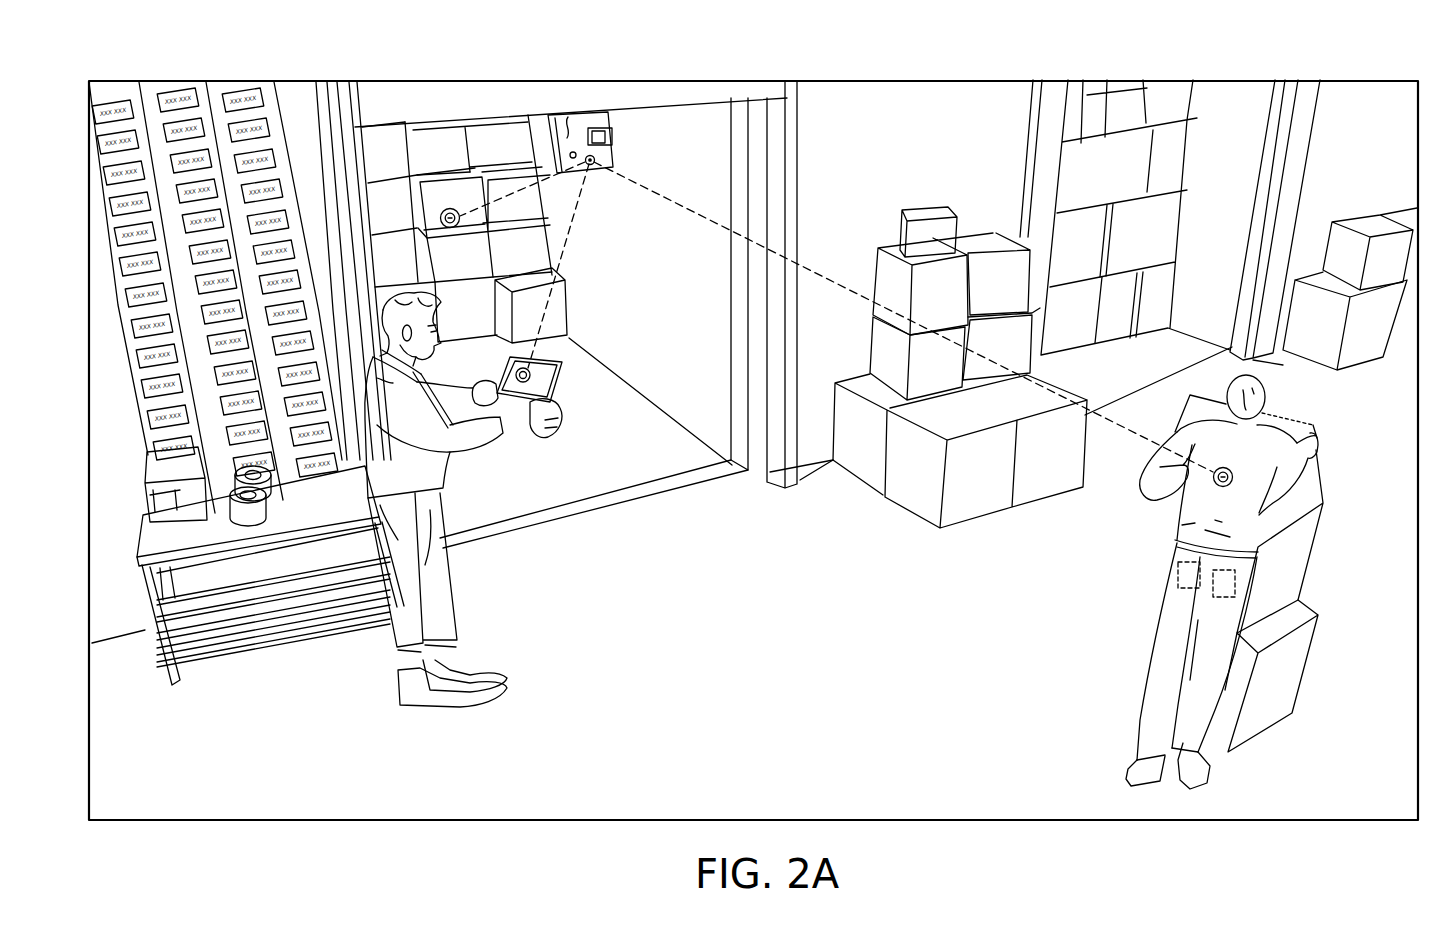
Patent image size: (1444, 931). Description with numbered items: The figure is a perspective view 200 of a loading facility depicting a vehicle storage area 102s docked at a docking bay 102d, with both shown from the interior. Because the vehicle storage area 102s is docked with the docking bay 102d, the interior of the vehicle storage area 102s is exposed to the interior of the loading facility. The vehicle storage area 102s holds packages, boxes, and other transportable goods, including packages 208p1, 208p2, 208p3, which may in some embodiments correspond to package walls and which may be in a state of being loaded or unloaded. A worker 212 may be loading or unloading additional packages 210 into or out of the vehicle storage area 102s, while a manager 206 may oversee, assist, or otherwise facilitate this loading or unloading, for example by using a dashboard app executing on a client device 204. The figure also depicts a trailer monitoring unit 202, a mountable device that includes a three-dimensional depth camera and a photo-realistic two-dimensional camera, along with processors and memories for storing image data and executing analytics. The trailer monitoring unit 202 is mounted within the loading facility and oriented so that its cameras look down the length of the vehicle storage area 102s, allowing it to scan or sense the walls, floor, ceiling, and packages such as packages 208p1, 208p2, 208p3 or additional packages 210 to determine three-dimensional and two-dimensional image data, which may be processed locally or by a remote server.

The perspective view 200 is at (133, 53).
The trailer monitoring unit (TMU) 202 is at (607, 157).
The client device 204 is at (540, 375).
The manager 206 is at (453, 597).
The package 208p1 is at (462, 132).
The package 208p2 is at (440, 208).
The package 208p3 is at (568, 310).
The additional packages 210 is at (1300, 424).
The worker 212 is at (1208, 447).
The docking bay 102d is at (752, 378).
The vehicle storage area 102s is at (618, 477).